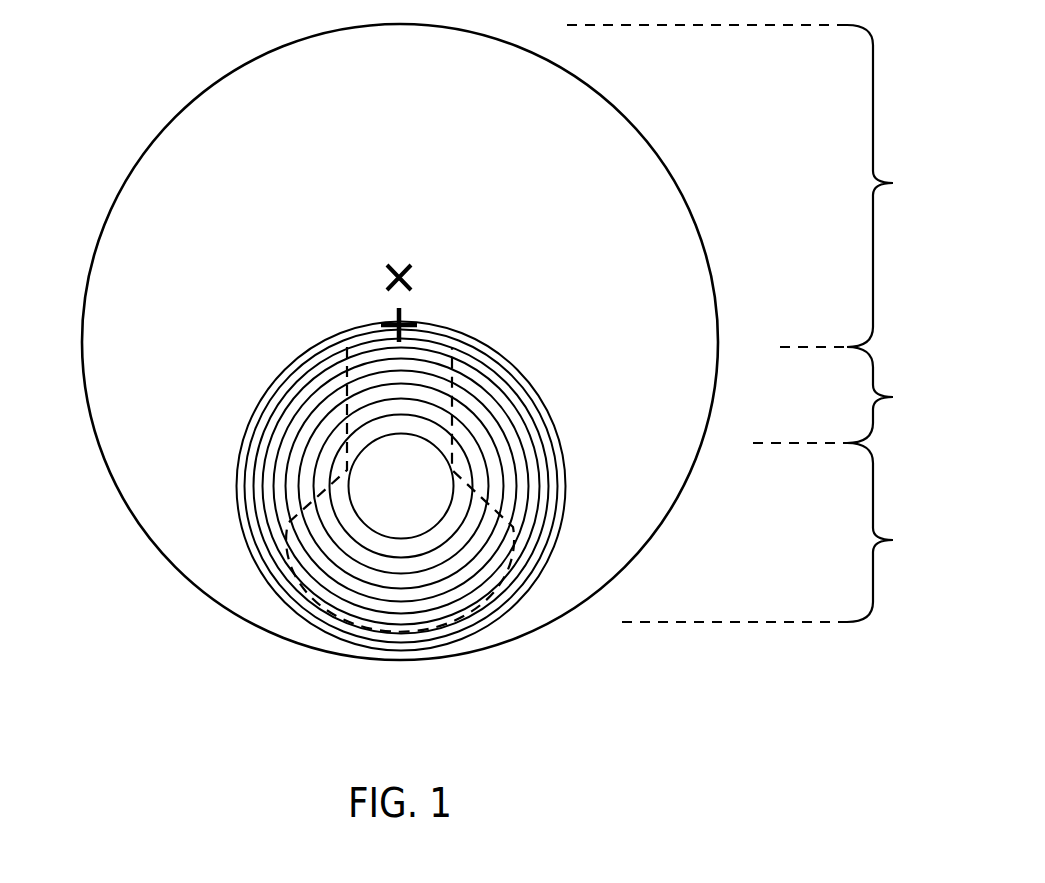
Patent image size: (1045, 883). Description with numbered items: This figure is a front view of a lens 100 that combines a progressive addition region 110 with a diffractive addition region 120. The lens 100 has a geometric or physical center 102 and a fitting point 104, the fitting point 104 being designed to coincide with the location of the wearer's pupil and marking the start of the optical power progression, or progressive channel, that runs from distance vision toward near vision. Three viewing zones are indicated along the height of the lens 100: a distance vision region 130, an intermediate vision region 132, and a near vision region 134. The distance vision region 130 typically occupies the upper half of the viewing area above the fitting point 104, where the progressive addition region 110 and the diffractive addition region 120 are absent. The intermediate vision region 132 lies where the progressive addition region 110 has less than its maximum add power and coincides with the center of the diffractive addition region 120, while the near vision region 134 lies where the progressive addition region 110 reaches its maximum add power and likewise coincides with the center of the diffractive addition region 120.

The lens 100 is at (115, 88).
The geometric center 102 is at (403, 320).
The fitting point 104 is at (399, 262).
The progressive addition region 110 is at (450, 395).
The diffractive addition region 120 is at (262, 415).
The distance vision region 130 is at (755, 186).
The intermediate vision region 132 is at (848, 395).
The near vision region 134 is at (782, 532).